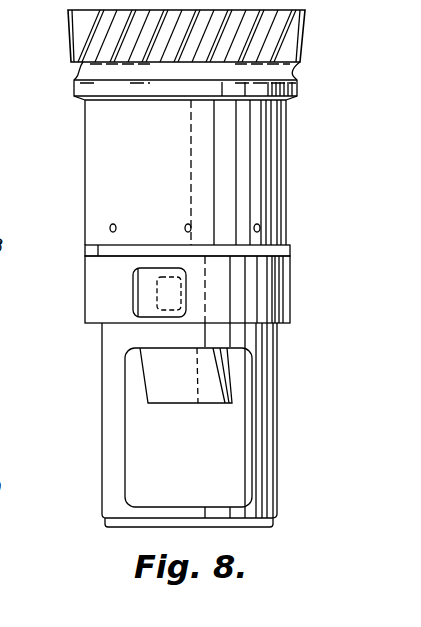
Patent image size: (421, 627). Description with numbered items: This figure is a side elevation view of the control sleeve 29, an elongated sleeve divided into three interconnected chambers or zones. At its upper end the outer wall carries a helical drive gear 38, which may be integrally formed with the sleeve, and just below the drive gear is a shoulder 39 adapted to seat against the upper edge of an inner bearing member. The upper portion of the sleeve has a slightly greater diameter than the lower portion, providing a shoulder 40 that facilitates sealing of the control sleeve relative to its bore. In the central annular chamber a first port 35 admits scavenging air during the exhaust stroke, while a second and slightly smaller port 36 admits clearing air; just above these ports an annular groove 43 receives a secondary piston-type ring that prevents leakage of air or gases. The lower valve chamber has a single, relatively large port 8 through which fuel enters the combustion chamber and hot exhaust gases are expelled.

The helical drive gear 38 is at (68, 22).
The shoulder 39 is at (78, 98).
The control sleeve 29 is at (288, 186).
The annular groove 43 is at (85, 250).
The shoulder 40 is at (95, 324).
The second port 36 is at (186, 290).
The first port 35 is at (186, 313).
The port 8 is at (248, 498).